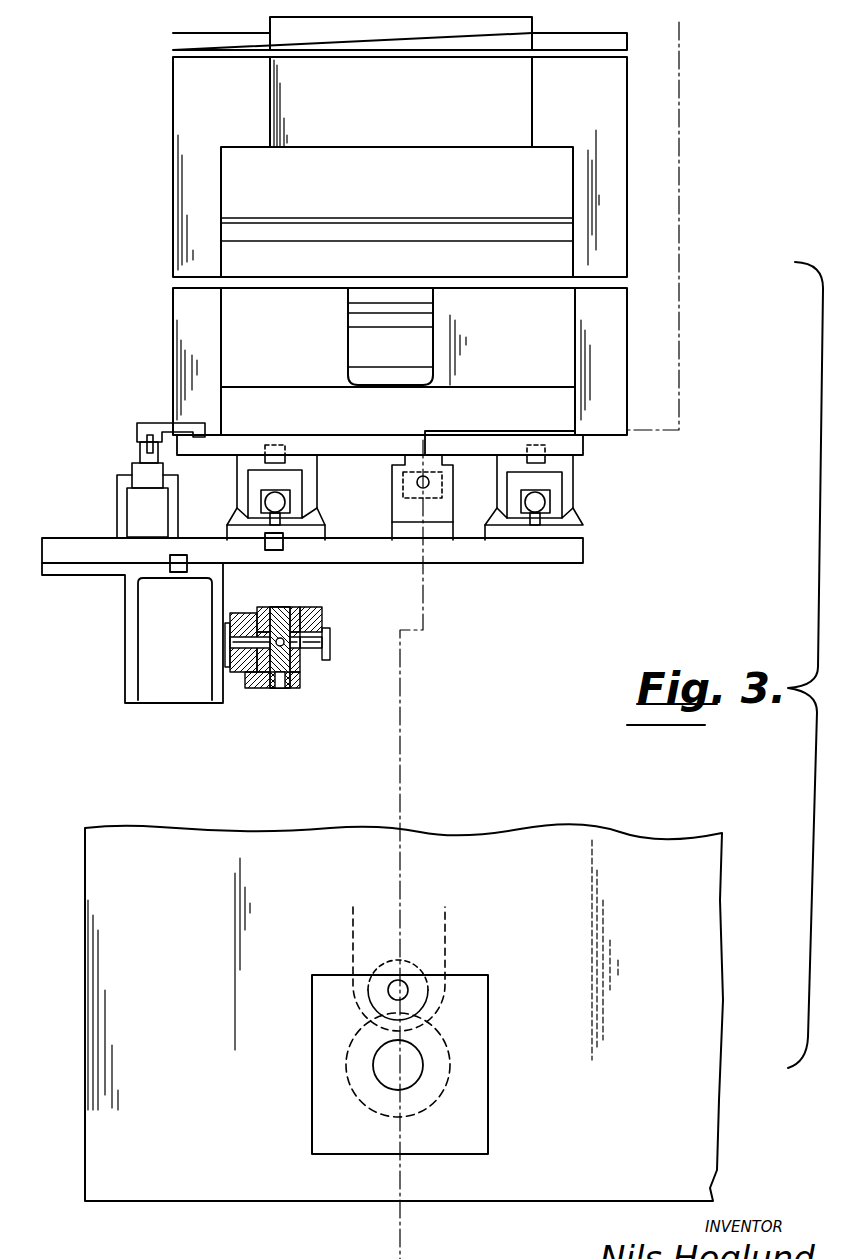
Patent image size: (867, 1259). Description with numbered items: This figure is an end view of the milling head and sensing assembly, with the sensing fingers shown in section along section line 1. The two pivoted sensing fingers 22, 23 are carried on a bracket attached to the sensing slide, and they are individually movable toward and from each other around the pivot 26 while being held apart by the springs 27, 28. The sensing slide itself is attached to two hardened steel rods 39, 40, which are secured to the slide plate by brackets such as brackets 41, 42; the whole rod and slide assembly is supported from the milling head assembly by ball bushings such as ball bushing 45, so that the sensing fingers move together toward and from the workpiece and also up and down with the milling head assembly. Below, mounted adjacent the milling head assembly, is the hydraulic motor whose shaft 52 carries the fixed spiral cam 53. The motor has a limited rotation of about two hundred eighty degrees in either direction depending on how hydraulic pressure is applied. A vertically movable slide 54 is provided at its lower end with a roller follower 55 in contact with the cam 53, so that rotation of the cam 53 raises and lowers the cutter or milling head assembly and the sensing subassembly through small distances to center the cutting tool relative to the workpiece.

The section line 1 is at (647, 29).
The sensing finger 22 is at (295, 607).
The sensing finger 23 is at (297, 690).
The pivot 26 is at (305, 650).
The spring 27 is at (280, 612).
The spring 28 is at (282, 690).
The hardened steel rod 39 is at (537, 500).
The hardened steel rod 40 is at (273, 500).
The bracket 41 is at (295, 482).
The bracket 42 is at (555, 482).
The ball bushing 45 is at (505, 463).
The shaft 52 is at (425, 1068).
The spiral cam 53 is at (445, 1098).
The vertically movable slide 54 is at (433, 945).
The roller follower 55 is at (375, 965).